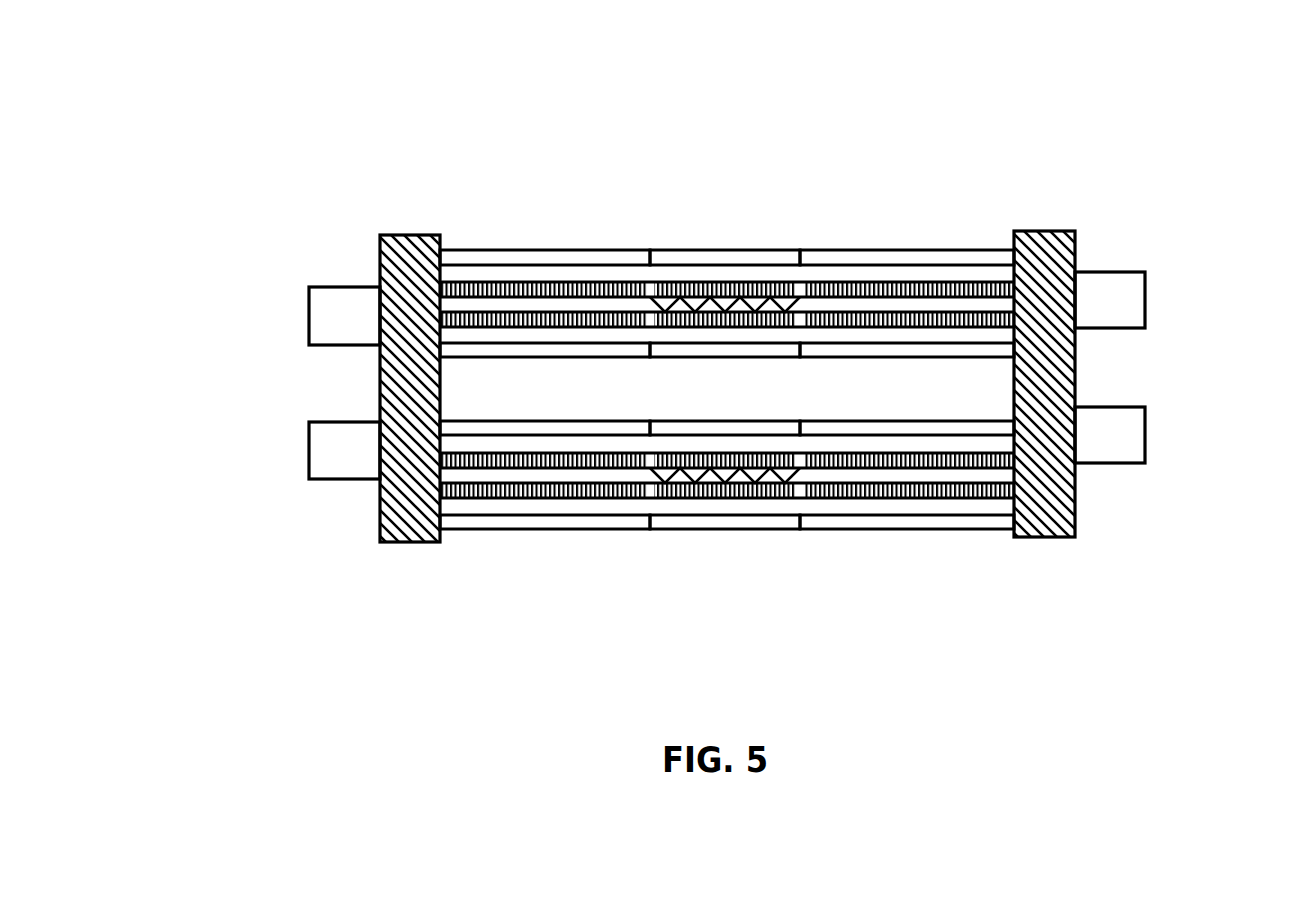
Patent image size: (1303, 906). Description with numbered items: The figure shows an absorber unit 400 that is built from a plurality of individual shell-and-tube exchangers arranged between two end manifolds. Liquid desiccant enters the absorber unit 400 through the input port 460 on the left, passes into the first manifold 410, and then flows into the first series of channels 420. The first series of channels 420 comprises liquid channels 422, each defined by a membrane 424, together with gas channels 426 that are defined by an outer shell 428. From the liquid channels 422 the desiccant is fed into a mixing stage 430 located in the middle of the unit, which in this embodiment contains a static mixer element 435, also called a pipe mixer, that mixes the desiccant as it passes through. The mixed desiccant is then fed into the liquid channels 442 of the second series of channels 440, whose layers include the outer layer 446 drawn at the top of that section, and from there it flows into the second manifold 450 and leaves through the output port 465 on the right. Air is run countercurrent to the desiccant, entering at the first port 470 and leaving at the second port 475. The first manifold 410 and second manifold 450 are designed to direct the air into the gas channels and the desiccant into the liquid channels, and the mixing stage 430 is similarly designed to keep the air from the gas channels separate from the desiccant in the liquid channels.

The absorber unit 400 is at (267, 106).
The first manifold 410 is at (413, 233).
The first series of channels 420 is at (650, 632).
The liquid channels 422 is at (497, 476).
The membrane 424 is at (546, 501).
The gas channels 426 is at (597, 270).
The outer shell 428 is at (545, 247).
The mixing stage 430 is at (800, 634).
The static mixer element 435 is at (697, 503).
The second series of channels 440 is at (1014, 634).
The liquid channels 442 is at (885, 477).
The outer layer 446 is at (912, 270).
The second manifold 450 is at (1046, 230).
The input port 460 is at (305, 315).
The output port 465 is at (1149, 298).
The first port 470 is at (1149, 433).
The second port 475 is at (305, 452).